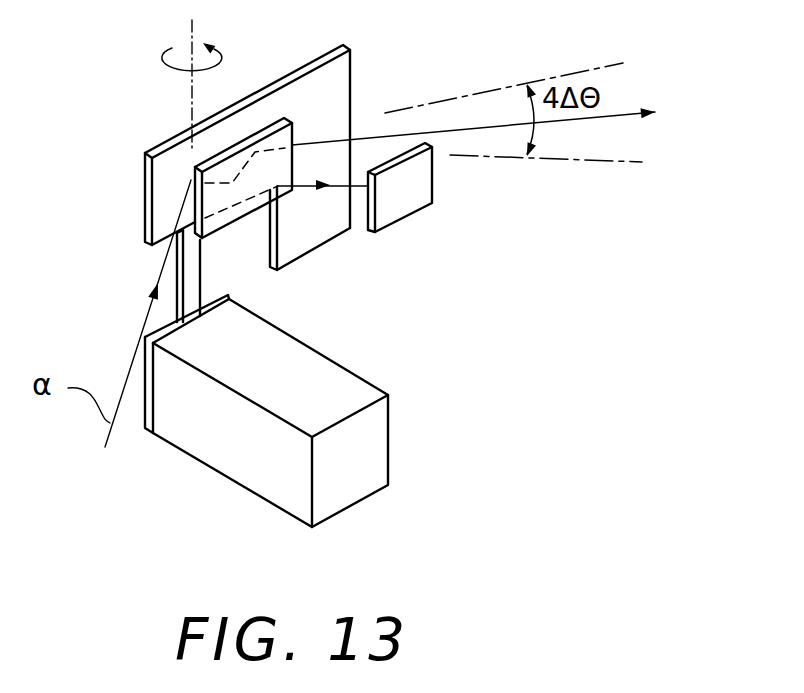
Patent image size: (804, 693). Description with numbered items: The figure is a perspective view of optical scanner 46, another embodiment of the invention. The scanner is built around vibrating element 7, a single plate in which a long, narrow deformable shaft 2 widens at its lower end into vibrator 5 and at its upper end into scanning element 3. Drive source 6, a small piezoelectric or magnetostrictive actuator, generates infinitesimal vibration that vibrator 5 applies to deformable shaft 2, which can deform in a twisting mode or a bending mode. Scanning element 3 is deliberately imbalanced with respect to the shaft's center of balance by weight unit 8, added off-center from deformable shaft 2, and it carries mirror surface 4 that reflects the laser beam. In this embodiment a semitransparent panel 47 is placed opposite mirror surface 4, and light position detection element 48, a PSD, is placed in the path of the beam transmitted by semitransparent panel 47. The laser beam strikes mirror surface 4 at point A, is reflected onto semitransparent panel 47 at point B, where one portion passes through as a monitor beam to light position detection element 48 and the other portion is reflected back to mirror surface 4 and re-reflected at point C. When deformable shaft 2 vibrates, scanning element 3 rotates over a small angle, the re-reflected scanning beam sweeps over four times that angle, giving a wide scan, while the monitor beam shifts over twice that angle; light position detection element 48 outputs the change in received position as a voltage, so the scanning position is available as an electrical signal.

The deformable shaft 2 is at (192, 282).
The scanning element 3 is at (340, 110).
The mirror surface 4 is at (242, 132).
The vibrator 5 is at (150, 398).
The drive source 6 is at (378, 468).
The vibrating element 7 is at (143, 188).
The weight unit 8 is at (322, 237).
The optical scanner 46 is at (110, 332).
The semitransparent panel 47 is at (215, 157).
The light position detection element 48 is at (425, 190).